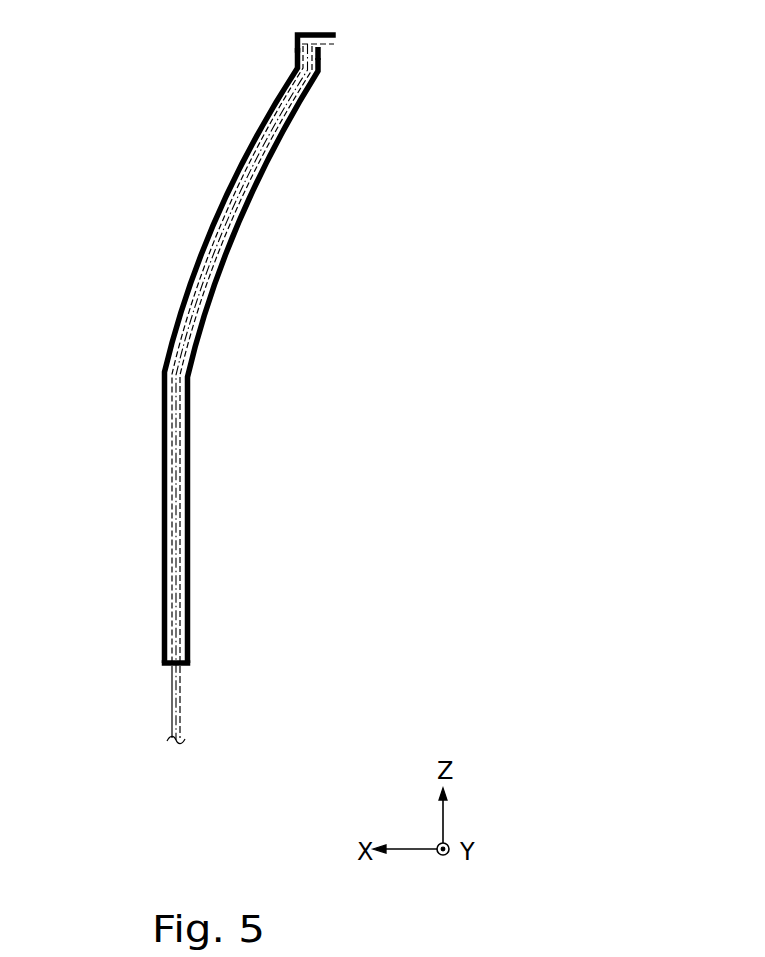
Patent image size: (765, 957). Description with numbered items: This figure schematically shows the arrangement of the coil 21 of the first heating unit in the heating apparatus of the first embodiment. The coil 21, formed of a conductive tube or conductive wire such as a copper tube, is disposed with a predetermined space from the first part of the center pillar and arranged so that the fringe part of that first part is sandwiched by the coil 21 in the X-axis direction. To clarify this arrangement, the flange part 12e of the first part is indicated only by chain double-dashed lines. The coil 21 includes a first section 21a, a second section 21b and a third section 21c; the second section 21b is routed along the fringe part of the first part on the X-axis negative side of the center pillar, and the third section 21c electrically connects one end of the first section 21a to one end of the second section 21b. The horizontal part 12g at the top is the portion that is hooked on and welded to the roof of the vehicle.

The coil 21 is at (244, 385).
The first section 21a is at (163, 460).
The second section 21b is at (190, 505).
The third section 21c is at (184, 665).
The horizontal part 12g is at (334, 44).
The flange part 12e is at (181, 707).